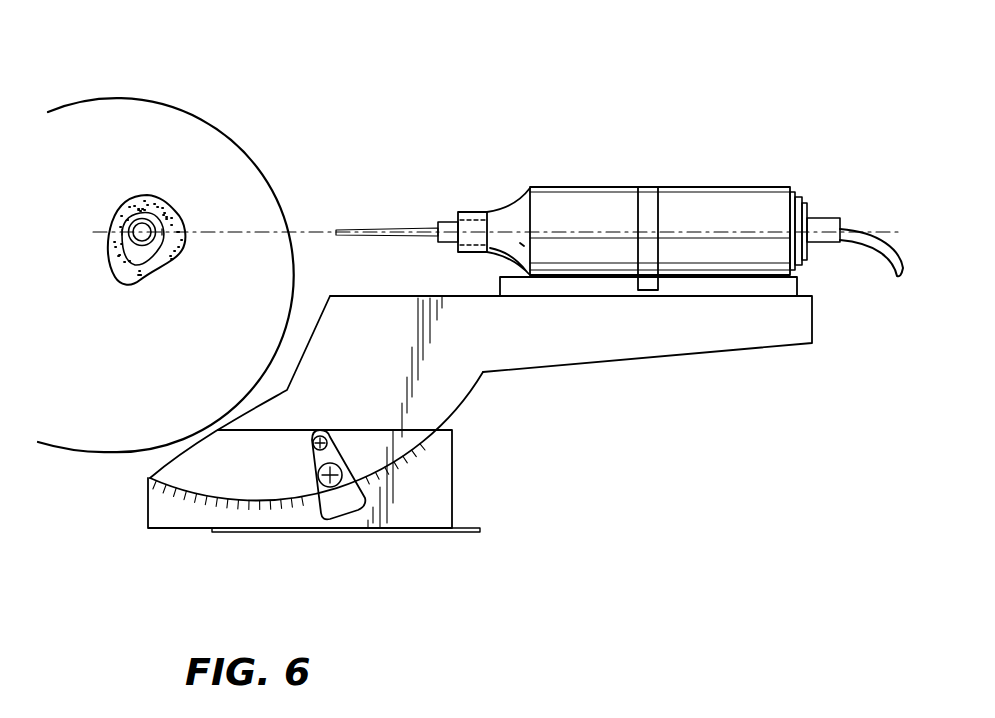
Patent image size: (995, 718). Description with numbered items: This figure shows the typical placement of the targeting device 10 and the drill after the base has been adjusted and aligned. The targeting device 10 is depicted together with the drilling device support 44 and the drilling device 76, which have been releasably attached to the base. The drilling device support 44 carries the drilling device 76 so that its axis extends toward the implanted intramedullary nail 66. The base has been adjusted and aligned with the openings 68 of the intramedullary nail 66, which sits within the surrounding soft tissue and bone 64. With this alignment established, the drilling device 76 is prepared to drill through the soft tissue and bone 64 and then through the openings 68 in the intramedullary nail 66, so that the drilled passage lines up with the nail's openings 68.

The targeting device 10 is at (489, 489).
The drilling device support 44 is at (602, 338).
The soft tissue and bone 64 is at (155, 196).
The intramedullary nail 66 is at (163, 213).
The openings 68 is at (180, 250).
The drilling device 76 is at (580, 187).